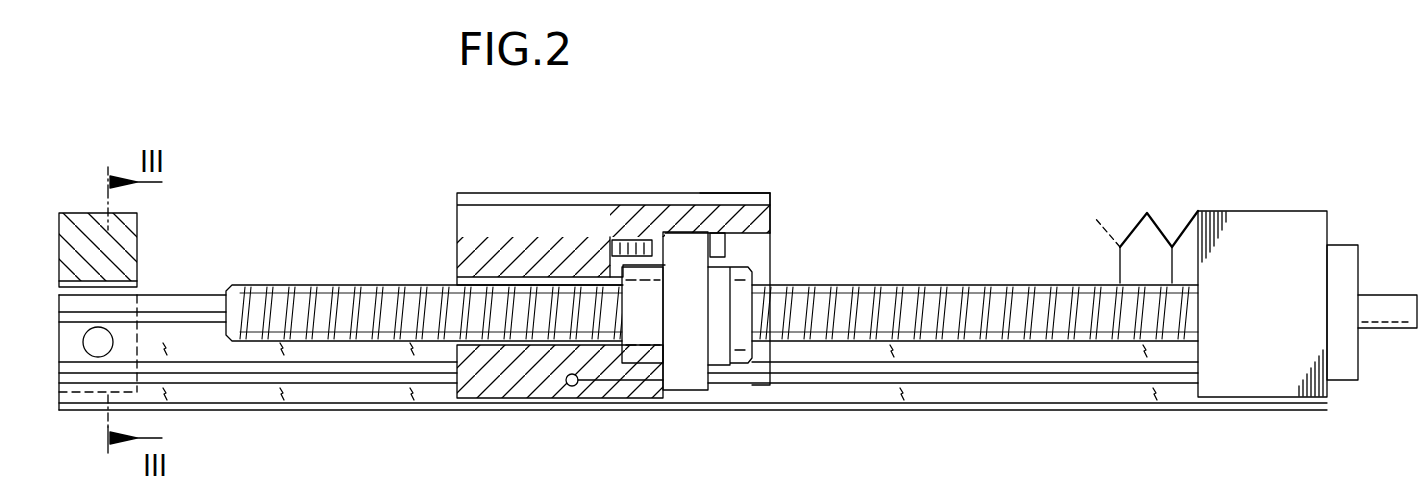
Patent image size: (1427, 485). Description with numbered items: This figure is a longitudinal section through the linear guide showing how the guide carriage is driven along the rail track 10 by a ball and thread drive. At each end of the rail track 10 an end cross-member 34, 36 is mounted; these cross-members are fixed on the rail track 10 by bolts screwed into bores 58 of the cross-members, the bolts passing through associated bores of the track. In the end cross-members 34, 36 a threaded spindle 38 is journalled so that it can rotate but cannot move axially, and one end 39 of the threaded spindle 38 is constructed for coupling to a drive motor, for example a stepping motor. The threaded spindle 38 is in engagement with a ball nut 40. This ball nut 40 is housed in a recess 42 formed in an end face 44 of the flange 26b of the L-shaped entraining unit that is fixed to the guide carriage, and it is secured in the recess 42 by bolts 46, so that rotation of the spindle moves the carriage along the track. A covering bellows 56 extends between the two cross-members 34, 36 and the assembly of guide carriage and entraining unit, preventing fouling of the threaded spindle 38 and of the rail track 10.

The rail track 10 is at (373, 398).
The end cross-member 34 is at (82, 227).
The bore 58 is at (96, 358).
The threaded spindle 38 is at (315, 290).
The flange 26b is at (507, 220).
The ball nut 40 is at (683, 388).
The recess 42 is at (760, 257).
The end face 44 is at (777, 210).
The bolt 46 is at (717, 237).
The covering bellows 56 is at (1143, 212).
The end cross-member 36 is at (1245, 222).
The end of threaded spindle 39 is at (1385, 302).